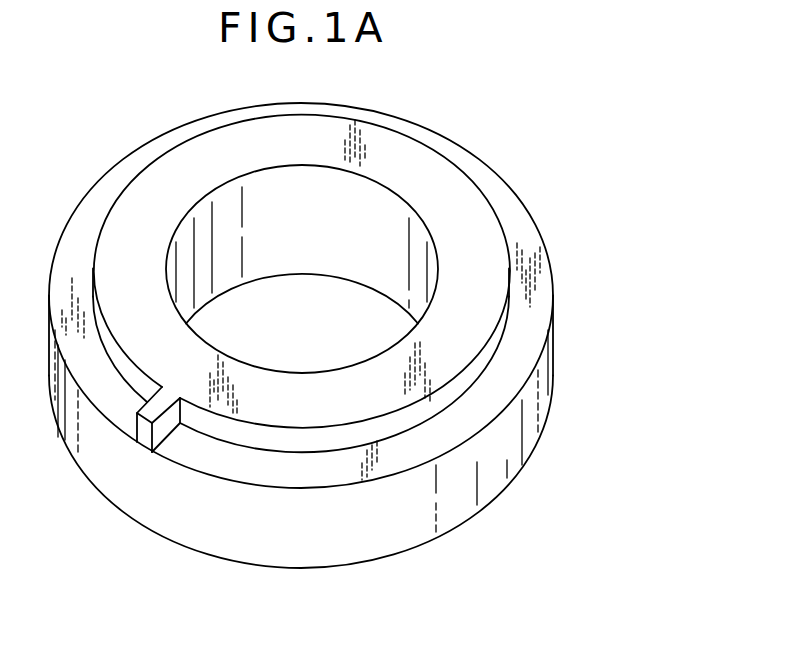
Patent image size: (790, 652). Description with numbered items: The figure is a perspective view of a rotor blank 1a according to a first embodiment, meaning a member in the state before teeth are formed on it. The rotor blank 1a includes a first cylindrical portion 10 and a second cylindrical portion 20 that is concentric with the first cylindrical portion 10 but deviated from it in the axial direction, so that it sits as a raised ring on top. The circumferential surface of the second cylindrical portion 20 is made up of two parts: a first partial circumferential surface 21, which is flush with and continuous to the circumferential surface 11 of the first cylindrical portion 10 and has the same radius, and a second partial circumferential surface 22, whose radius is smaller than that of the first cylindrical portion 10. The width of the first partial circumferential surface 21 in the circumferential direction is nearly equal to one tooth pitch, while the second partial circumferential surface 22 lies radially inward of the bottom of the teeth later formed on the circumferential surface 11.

The rotor blank 1a is at (520, 172).
The first cylindrical portion 10 is at (524, 489).
The circumferential surface 11 is at (451, 508).
The second cylindrical portion 20 is at (455, 346).
The first partial circumferential surface 21 is at (140, 432).
The second partial circumferential surface 22 is at (465, 384).